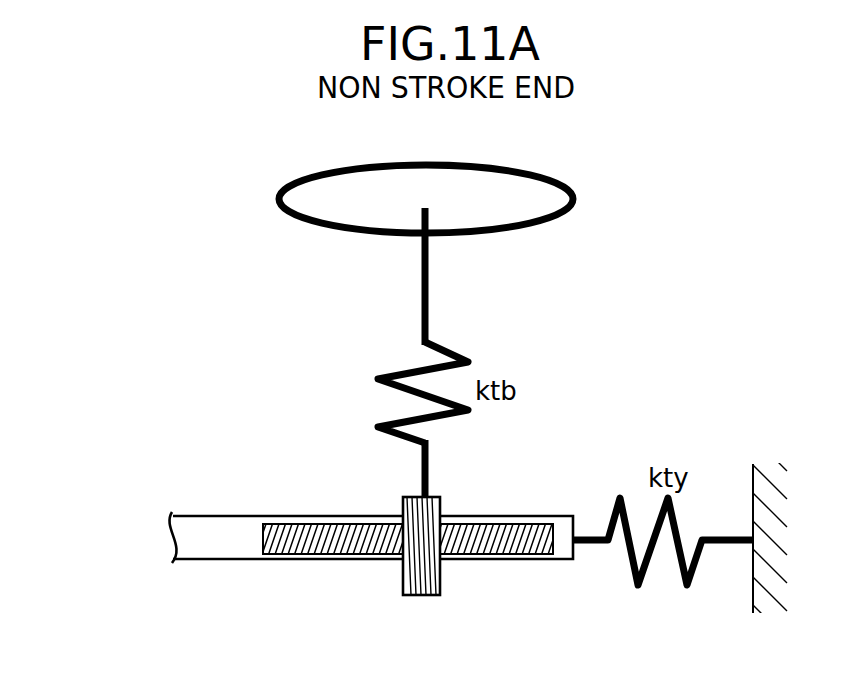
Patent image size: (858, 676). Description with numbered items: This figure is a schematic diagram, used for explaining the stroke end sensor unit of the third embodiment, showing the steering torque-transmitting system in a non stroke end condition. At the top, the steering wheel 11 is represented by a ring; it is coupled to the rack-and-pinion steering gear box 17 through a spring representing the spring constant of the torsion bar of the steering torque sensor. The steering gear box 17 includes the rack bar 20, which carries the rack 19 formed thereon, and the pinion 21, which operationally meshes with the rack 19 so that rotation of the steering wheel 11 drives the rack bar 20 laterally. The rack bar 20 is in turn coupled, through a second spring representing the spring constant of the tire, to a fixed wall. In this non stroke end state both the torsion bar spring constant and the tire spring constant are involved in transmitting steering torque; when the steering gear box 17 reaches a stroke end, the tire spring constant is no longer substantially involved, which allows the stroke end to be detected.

The steering wheel 11 is at (550, 220).
The steering gear box 17 is at (374, 540).
The rack 19 is at (332, 548).
The rack bar 20 is at (232, 511).
The pinion 21 is at (433, 580).